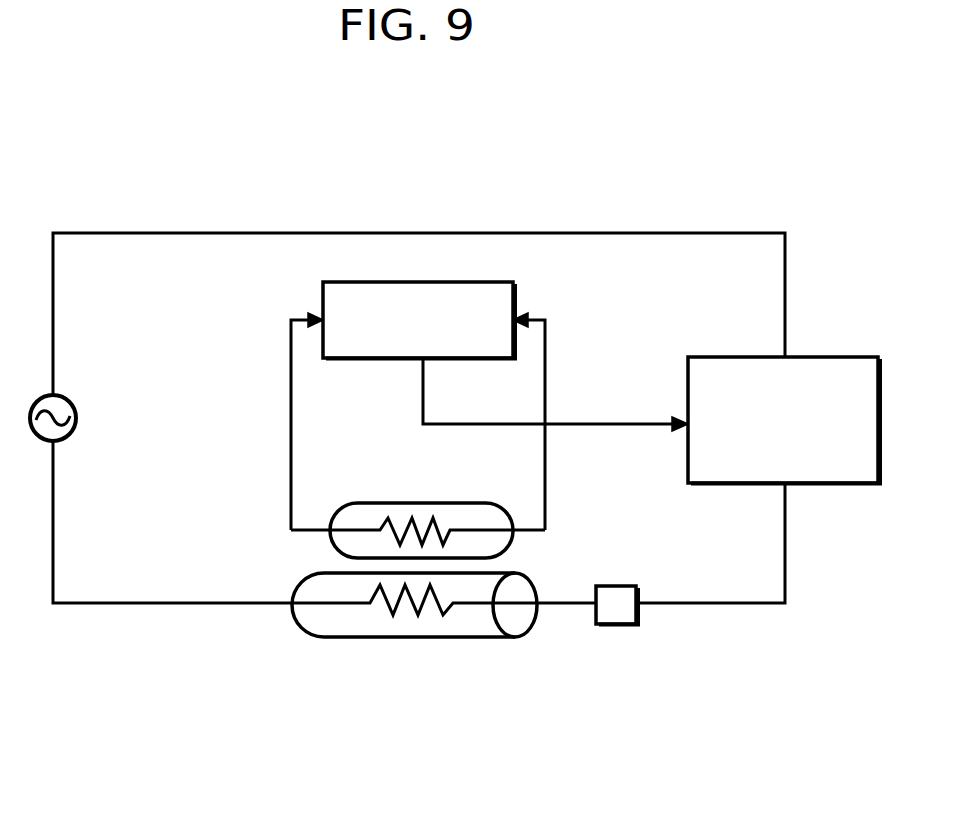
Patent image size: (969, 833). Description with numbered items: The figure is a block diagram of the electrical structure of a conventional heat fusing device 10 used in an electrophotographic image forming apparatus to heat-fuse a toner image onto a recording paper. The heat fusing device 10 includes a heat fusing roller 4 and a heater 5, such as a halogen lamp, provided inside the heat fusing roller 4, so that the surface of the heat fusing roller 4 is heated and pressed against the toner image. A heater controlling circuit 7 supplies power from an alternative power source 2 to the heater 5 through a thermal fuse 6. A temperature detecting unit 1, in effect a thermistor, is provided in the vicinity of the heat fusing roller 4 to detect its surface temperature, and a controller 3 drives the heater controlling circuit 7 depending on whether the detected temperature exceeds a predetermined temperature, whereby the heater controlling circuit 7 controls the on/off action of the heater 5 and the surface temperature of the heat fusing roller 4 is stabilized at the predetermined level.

The heat fusing device 10 is at (145, 204).
The temperature detecting unit 1 is at (362, 503).
The alternative power source 2 is at (73, 399).
The controller 3 is at (514, 288).
The heat fusing roller 4 is at (332, 637).
The heater 5 is at (394, 610).
The thermal fuse 6 is at (617, 625).
The heater controlling circuit 7 is at (834, 356).